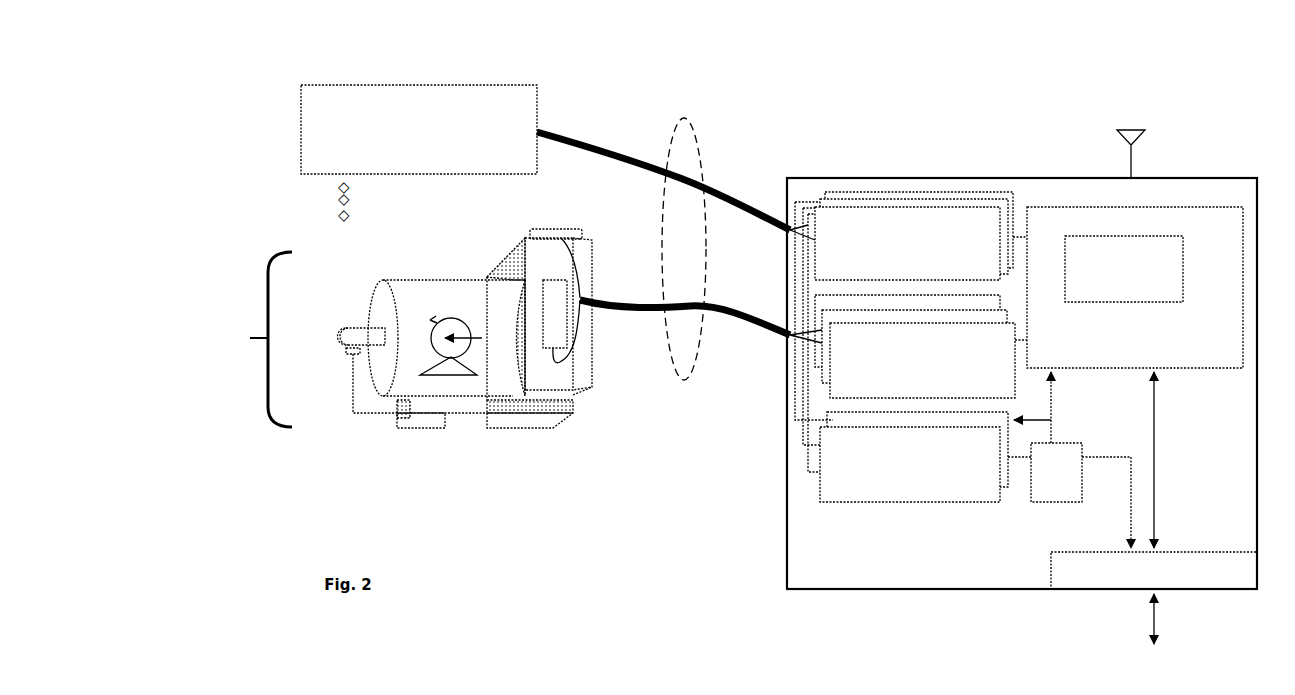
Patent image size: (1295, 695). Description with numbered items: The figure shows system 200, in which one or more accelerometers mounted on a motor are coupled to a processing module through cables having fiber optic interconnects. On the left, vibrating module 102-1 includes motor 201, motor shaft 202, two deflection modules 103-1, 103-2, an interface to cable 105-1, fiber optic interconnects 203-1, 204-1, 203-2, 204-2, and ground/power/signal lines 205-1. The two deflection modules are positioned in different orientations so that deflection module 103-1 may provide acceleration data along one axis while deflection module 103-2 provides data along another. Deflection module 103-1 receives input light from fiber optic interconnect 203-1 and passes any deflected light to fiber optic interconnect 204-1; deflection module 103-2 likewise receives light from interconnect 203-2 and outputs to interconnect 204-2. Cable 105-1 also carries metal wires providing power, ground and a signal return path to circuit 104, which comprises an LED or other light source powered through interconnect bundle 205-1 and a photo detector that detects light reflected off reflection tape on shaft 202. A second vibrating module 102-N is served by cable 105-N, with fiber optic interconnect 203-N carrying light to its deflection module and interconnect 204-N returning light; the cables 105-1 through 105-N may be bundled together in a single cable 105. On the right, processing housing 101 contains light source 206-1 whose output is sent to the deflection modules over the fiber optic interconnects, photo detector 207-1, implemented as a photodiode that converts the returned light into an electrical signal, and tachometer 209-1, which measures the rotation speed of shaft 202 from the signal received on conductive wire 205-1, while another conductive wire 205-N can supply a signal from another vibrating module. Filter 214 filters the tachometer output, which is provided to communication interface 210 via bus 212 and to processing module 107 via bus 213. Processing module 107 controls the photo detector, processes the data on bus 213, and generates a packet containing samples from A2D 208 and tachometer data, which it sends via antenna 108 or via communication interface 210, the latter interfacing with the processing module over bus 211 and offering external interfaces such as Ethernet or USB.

The system 200 is at (920, 26).
The processing housing 101 is at (1022, 383).
The vibrating module 102-1 is at (246, 339).
The vibrating module 102-N is at (419, 129).
The deflection module 103-1 is at (527, 280).
The deflection module 103-2 is at (556, 229).
The circuit 104 is at (346, 351).
The cable bundle 105 is at (695, 133).
The cable 105-1 is at (612, 303).
The cable 105-N is at (588, 148).
The processing module 107 is at (1135, 287).
The antenna 108 is at (1145, 130).
The motor 201 is at (433, 290).
The motor shaft 202 is at (362, 338).
The fiber optic interconnect 203-1 is at (557, 300).
The fiber optic interconnect 203-2 is at (570, 242).
The fiber optic interconnect 203-N is at (805, 200).
The fiber optic interconnect 204-1 is at (573, 343).
The fiber optic interconnect 204-2 is at (577, 258).
The fiber optic interconnect 204-N is at (787, 193).
The ground/power/signal lines 205-1 is at (352, 388).
The conductive wire 205-N is at (783, 400).
The light source 206-1 is at (914, 236).
The photo detector 207-1 is at (915, 346).
The A2D 208 is at (1124, 269).
The tachometer 209-1 is at (914, 457).
The communication interface 210 is at (1154, 598).
The bus 211 is at (1156, 455).
The bus 212 is at (1102, 457).
The bus 213 is at (1051, 412).
The filter 214 is at (1045, 472).